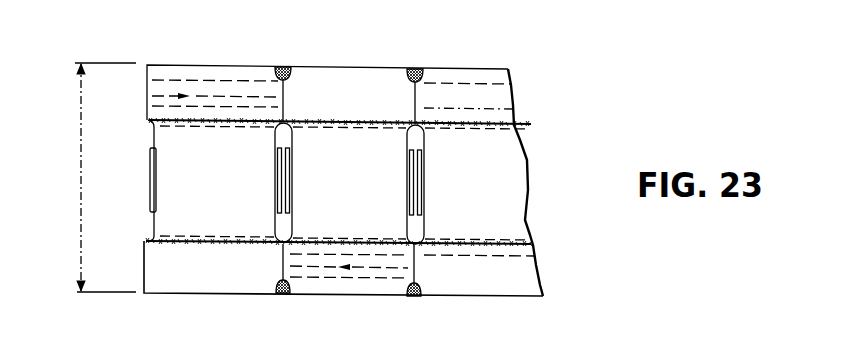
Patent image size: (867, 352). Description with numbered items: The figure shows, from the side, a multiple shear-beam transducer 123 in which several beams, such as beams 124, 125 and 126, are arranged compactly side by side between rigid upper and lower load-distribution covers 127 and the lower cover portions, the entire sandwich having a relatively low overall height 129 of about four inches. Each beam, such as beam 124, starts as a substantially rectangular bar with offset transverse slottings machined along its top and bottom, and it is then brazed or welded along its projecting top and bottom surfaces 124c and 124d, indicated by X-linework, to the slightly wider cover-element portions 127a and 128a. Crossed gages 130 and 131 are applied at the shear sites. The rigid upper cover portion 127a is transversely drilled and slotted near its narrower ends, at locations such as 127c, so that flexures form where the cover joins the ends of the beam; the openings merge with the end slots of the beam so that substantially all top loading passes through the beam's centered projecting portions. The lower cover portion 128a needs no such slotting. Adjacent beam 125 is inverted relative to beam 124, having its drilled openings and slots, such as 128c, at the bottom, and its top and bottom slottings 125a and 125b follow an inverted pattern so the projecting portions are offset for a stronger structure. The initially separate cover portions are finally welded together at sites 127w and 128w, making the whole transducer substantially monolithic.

The multiple shear-beam transducer 123 is at (630, 110).
The beam 124 is at (233, 194).
The projecting top surface of beam 124c is at (205, 124).
The projecting bottom surface of beam 124d is at (215, 244).
The beam 125 is at (365, 197).
The top slotting of beam 125a is at (333, 131).
The bottom slotting of beam 125b is at (323, 235).
The beam 126 is at (485, 202).
The upper load-distribution cover 127 is at (440, 68).
The upper cover-element portion 127a is at (237, 78).
The drilled and slotted location of upper cover portion 127c is at (147, 96).
The welding site of upper cover 127w is at (408, 65).
The lower cover-element portion 128a is at (240, 282).
The drilled opening and slot of lower cover 128c is at (368, 270).
The welding site of lower cover 128w is at (284, 296).
The overall height 129 is at (80, 178).
The crossed gage 130 is at (151, 178).
The crossed gage 131 is at (275, 181).